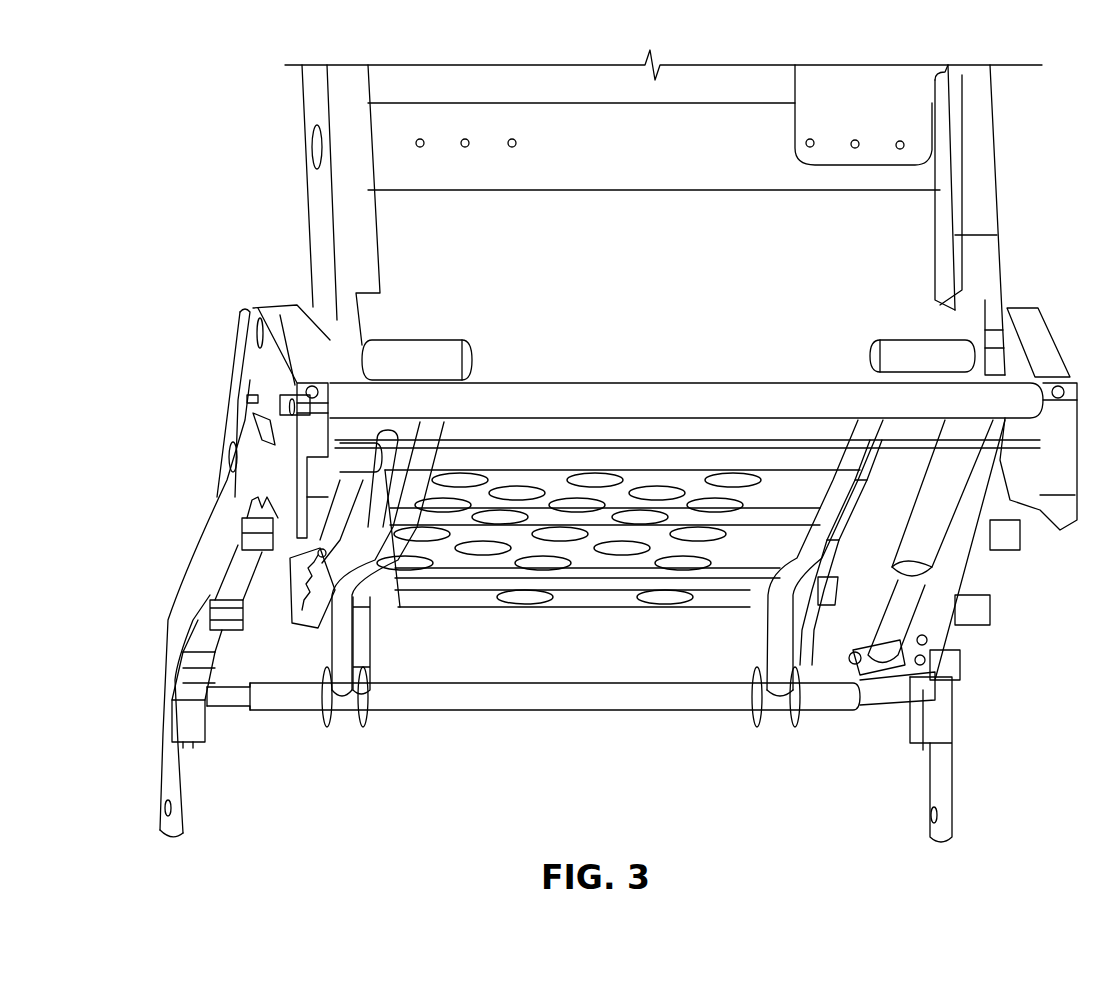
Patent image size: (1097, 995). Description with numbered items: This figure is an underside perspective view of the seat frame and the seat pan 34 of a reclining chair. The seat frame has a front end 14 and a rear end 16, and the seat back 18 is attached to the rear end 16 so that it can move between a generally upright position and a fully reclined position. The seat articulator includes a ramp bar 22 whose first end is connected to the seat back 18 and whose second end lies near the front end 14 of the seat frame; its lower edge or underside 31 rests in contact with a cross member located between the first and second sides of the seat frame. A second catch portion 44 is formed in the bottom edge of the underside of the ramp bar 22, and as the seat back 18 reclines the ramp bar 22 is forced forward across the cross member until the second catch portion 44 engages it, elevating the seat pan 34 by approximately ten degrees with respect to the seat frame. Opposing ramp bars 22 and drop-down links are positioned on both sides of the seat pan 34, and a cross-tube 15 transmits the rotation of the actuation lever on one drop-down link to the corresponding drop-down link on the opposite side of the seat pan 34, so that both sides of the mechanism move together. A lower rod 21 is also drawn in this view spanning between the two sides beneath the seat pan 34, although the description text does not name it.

The front end 14 is at (165, 720).
The cross-tube 15 is at (565, 573).
The rear end 16 is at (300, 390).
The seat back 18 is at (985, 185).
The lower rod 21 is at (500, 698).
The ramp bar 22 is at (332, 655).
The lower edge or underside 31 is at (360, 672).
The seat pan 34 is at (486, 608).
The second catch portion 44 is at (337, 690).